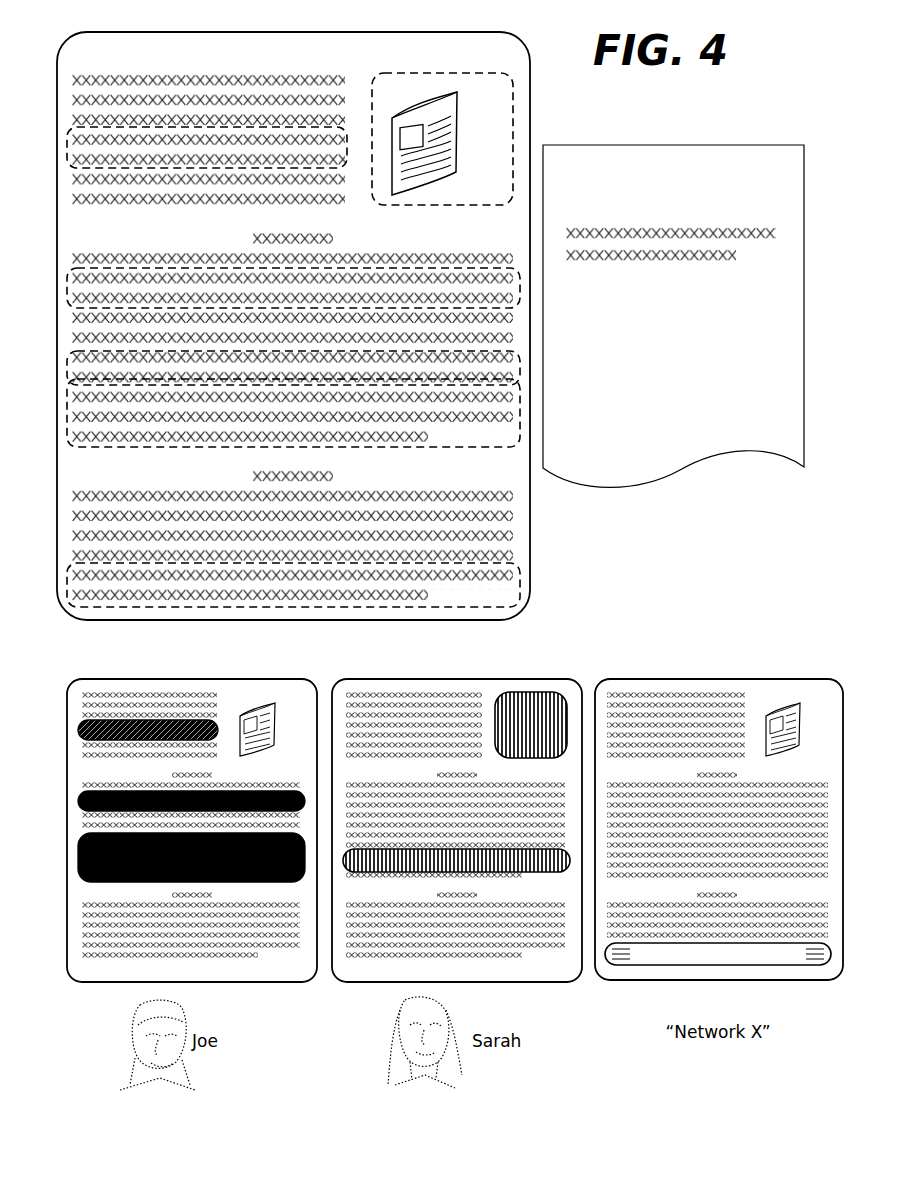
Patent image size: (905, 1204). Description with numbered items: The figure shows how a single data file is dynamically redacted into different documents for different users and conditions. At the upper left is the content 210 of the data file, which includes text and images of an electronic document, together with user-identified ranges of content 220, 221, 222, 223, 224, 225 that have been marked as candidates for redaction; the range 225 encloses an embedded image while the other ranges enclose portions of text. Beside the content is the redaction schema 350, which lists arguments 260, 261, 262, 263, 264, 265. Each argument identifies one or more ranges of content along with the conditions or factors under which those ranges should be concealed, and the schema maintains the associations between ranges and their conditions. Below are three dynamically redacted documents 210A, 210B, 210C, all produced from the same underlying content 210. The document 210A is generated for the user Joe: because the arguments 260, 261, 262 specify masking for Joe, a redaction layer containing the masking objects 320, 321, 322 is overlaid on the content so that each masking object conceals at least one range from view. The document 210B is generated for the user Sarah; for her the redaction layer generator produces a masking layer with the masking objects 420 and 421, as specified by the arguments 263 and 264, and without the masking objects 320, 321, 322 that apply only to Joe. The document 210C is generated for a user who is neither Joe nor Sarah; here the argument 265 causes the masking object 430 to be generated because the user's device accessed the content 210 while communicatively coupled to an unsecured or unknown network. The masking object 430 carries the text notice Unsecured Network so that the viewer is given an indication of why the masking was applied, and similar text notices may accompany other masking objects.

The content 210 is at (153, 33).
The range of content 220 is at (77, 149).
The range of content 221 is at (79, 289).
The range of content 222 is at (79, 374).
The range of content 223 is at (84, 412).
The range of content 224 is at (82, 580).
The range of content 225 is at (392, 82).
The redaction schema 350 is at (673, 316).
The argument 260 is at (785, 298).
The argument 261 is at (785, 324).
The argument 262 is at (785, 351).
The argument 263 is at (785, 377).
The argument 264 is at (785, 403).
The argument 265 is at (785, 429).
The dynamically redacted document 210A is at (141, 679).
The masking object 320 is at (84, 728).
The masking object 321 is at (84, 800).
The masking object 322 is at (84, 856).
The dynamically redacted document 210B is at (411, 679).
The masking object 420 is at (504, 697).
The masking object 421 is at (416, 850).
The dynamically redacted document 210C is at (673, 679).
The masking object 430 is at (646, 945).